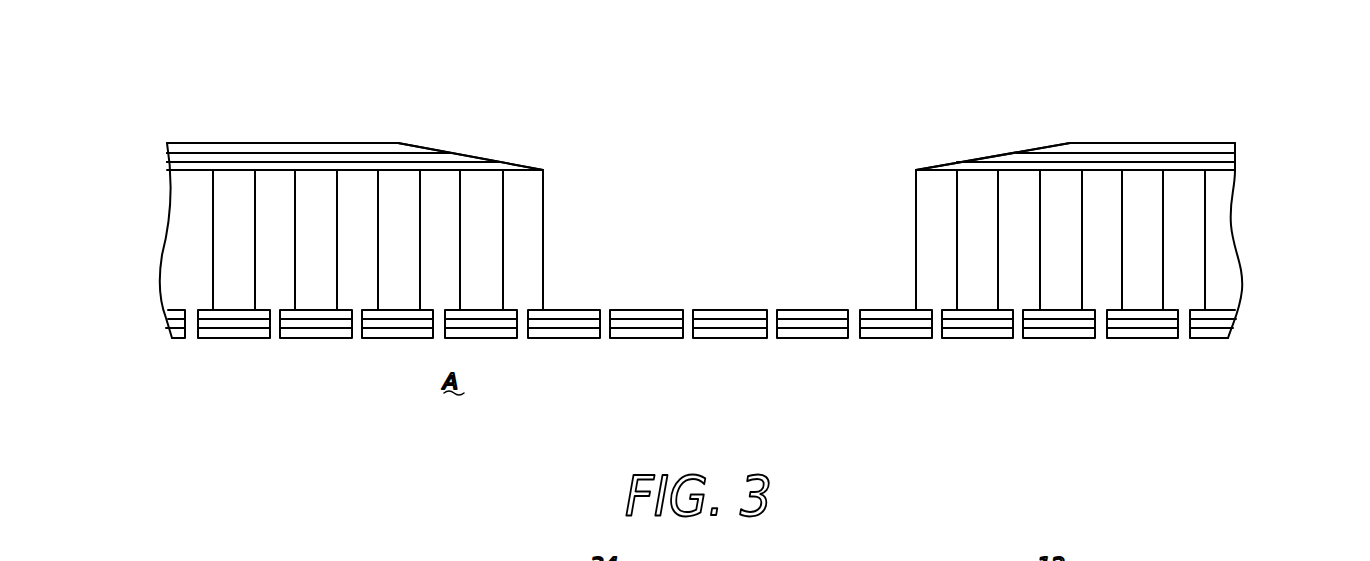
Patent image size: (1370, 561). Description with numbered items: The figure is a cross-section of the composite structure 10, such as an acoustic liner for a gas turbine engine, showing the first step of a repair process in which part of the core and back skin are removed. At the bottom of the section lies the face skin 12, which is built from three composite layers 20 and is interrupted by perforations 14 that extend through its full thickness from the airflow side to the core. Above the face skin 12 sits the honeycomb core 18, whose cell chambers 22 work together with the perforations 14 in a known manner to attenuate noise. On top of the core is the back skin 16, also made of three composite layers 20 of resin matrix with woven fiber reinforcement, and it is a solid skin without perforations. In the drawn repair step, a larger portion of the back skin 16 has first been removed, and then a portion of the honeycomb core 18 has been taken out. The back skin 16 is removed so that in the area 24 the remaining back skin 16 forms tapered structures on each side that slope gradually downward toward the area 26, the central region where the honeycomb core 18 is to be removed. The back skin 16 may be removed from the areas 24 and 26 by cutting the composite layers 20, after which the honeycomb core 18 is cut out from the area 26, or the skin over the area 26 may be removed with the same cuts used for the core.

The composite structure 10 is at (755, 218).
The face skin 12 is at (1258, 331).
The perforations 14 is at (688, 346).
The back skin 16 is at (1254, 157).
The honeycomb core 18 is at (1256, 242).
The composite layers 20 is at (232, 148).
The cell chambers 22 is at (1022, 188).
The area 24 is at (482, 146).
The area 26 is at (714, 202).